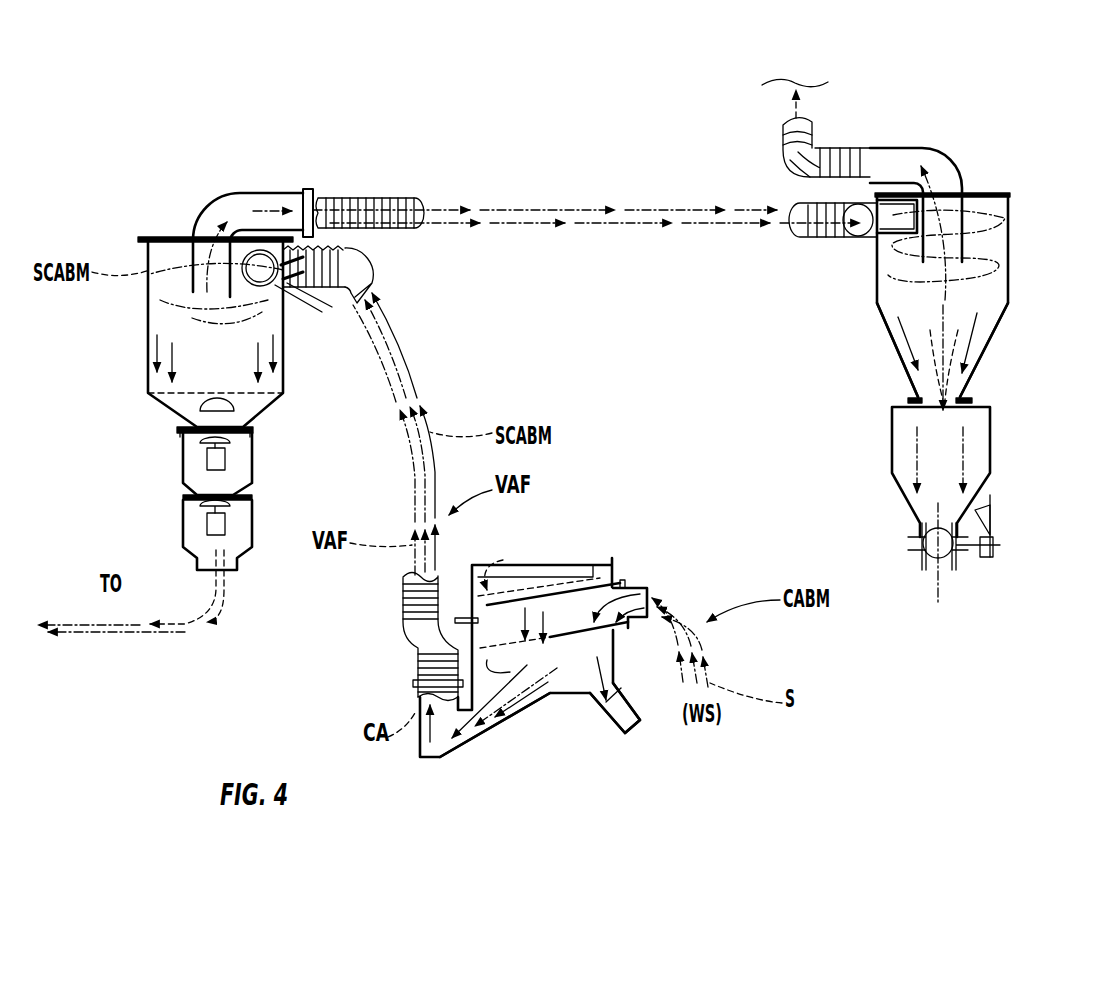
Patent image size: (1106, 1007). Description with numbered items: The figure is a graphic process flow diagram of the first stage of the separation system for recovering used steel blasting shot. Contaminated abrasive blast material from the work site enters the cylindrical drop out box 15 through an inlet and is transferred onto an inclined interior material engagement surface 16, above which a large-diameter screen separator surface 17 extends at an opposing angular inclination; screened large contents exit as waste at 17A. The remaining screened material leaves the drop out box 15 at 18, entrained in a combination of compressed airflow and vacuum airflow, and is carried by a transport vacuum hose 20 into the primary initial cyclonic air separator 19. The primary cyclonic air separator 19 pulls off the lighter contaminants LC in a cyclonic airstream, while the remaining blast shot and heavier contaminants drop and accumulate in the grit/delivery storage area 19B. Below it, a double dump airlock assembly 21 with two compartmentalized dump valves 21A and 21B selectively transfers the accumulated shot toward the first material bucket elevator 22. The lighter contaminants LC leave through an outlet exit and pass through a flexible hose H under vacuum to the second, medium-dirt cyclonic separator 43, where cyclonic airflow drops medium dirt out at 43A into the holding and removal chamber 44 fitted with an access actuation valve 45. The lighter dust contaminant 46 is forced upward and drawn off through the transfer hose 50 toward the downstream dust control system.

The drop out box 15 is at (639, 552).
The inclined interior material engagement surface 16 is at (648, 595).
The screen separator surface 17 is at (543, 578).
The screened large contents exit 17A is at (651, 756).
The screened material transfer 18 is at (527, 698).
The primary initial cyclonic air separator 19 is at (162, 226).
The grit/delivery storage area 19B is at (182, 402).
The transport vacuum hose 20 is at (357, 258).
The double dump airlock assembly 21 is at (222, 501).
The dump valve 21A is at (207, 458).
The dump valve 21B is at (207, 523).
The first material bucket elevator 22 is at (68, 606).
The second cyclonic separator 43 is at (850, 277).
The medium dirt drop out 43A is at (912, 350).
The holding and removal chamber 44 is at (905, 435).
The access actuation valve 45 is at (923, 560).
The lighter dust contaminant 46 is at (957, 173).
The transfer hose 50 is at (783, 153).
The flexible hose H is at (401, 203).
The lighter contaminants LC is at (270, 210).